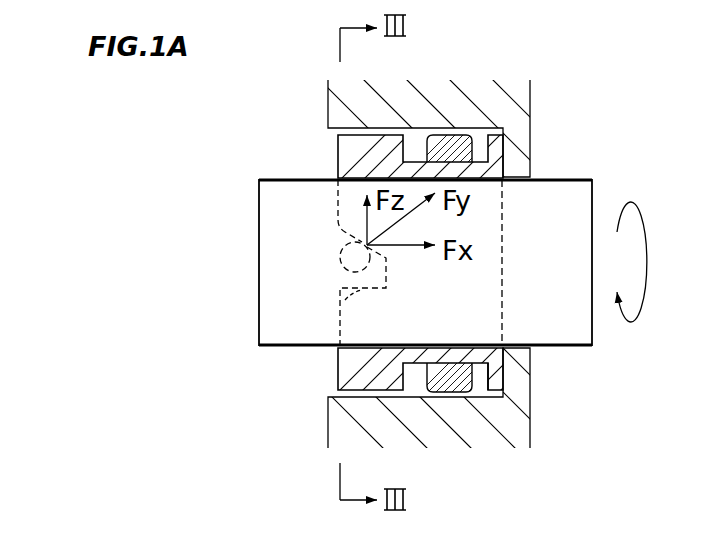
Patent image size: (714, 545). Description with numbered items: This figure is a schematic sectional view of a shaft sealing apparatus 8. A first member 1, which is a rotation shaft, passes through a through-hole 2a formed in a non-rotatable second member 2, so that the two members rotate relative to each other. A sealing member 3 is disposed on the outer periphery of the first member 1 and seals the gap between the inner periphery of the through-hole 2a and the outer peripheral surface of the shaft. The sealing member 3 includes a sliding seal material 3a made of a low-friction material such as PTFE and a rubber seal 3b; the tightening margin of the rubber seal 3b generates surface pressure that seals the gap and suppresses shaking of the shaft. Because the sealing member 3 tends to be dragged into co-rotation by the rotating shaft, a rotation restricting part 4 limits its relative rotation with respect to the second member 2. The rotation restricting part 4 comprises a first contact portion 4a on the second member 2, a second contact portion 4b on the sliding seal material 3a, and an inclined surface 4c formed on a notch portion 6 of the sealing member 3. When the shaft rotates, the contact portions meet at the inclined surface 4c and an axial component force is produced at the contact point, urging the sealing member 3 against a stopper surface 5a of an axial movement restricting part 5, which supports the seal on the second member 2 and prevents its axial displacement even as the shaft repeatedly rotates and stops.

The first member 1 is at (548, 200).
The second member 2 is at (341, 112).
The through-hole 2a is at (338, 135).
The sealing member 3 is at (228, 368).
The sliding seal material 3a is at (338, 368).
The rubber seal 3b is at (428, 392).
The rotation restricting part 4 is at (156, 182).
The first contact portion 4a is at (340, 258).
The second contact portion 4b is at (385, 280).
The inclined surface 4c is at (345, 245).
The axial movement restricting part 5 is at (504, 388).
The stopper surface 5a is at (503, 363).
The notch portion 6 is at (360, 297).
The shaft sealing apparatus 8 is at (541, 94).